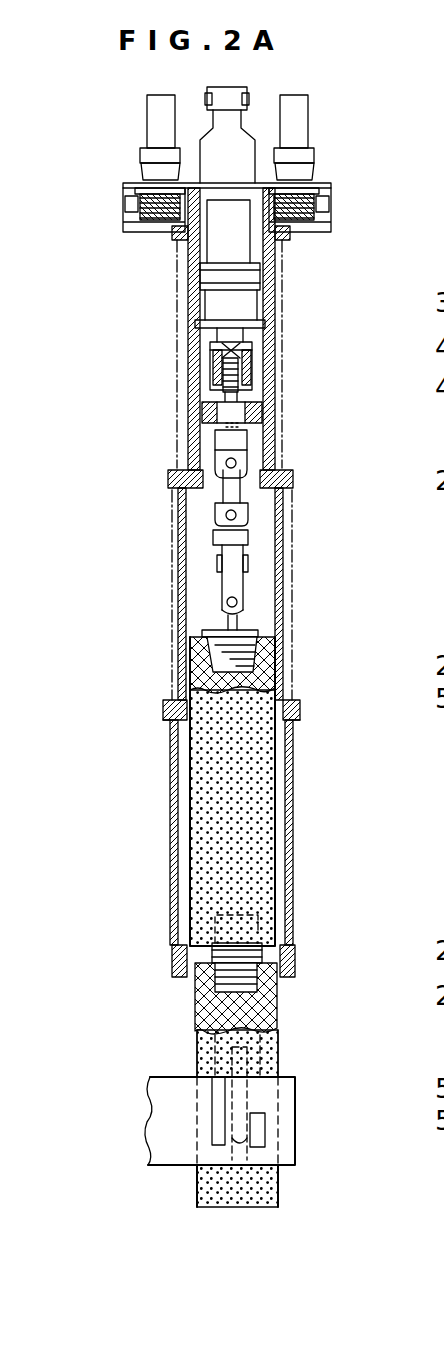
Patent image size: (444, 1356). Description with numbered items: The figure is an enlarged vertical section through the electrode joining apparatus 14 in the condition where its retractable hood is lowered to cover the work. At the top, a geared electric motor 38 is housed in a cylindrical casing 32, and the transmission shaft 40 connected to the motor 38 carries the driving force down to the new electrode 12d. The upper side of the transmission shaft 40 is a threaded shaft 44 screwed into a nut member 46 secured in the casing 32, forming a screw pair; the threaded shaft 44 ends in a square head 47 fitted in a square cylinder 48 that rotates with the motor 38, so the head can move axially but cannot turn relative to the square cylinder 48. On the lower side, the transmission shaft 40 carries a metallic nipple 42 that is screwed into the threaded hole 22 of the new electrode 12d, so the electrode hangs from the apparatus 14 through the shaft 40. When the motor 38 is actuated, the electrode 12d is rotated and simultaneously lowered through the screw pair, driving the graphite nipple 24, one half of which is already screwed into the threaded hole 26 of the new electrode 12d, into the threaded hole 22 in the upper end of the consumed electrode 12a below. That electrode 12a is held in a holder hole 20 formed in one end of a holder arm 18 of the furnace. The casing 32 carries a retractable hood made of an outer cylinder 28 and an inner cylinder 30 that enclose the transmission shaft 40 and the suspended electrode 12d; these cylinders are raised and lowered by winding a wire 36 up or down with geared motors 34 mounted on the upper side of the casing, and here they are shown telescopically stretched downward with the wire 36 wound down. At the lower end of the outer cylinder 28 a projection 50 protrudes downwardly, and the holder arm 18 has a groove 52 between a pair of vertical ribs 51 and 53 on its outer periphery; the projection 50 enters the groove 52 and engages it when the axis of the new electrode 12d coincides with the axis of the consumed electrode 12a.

The geared electric motors 34 is at (147, 118).
The geared electric motor 38 is at (237, 248).
The cylindrical casing 32 is at (188, 287).
The wire 36 is at (283, 310).
The square cylinder 48 is at (210, 362).
The square head 47 is at (248, 352).
The threaded shaft 44 is at (253, 385).
The nut member 46 is at (234, 412).
The joining apparatus 14 is at (140, 448).
The transmission shaft 40 is at (252, 515).
The inner cylinder 30 is at (178, 530).
The threaded hole 22 is at (208, 652).
The metallic nipple 42 is at (243, 650).
The new electrode 12d is at (258, 776).
The outer cylinder 28 is at (170, 845).
The threaded hole 26 is at (244, 922).
The nipple 24 is at (212, 966).
The electrode 12a is at (265, 1190).
The holder hole 20 is at (276, 1106).
The holder arm 18 is at (158, 1107).
The projection 50 is at (237, 1113).
The vertical rib 51 is at (212, 1130).
The vertical rib 53 is at (262, 1134).
The groove 52 is at (243, 1146).